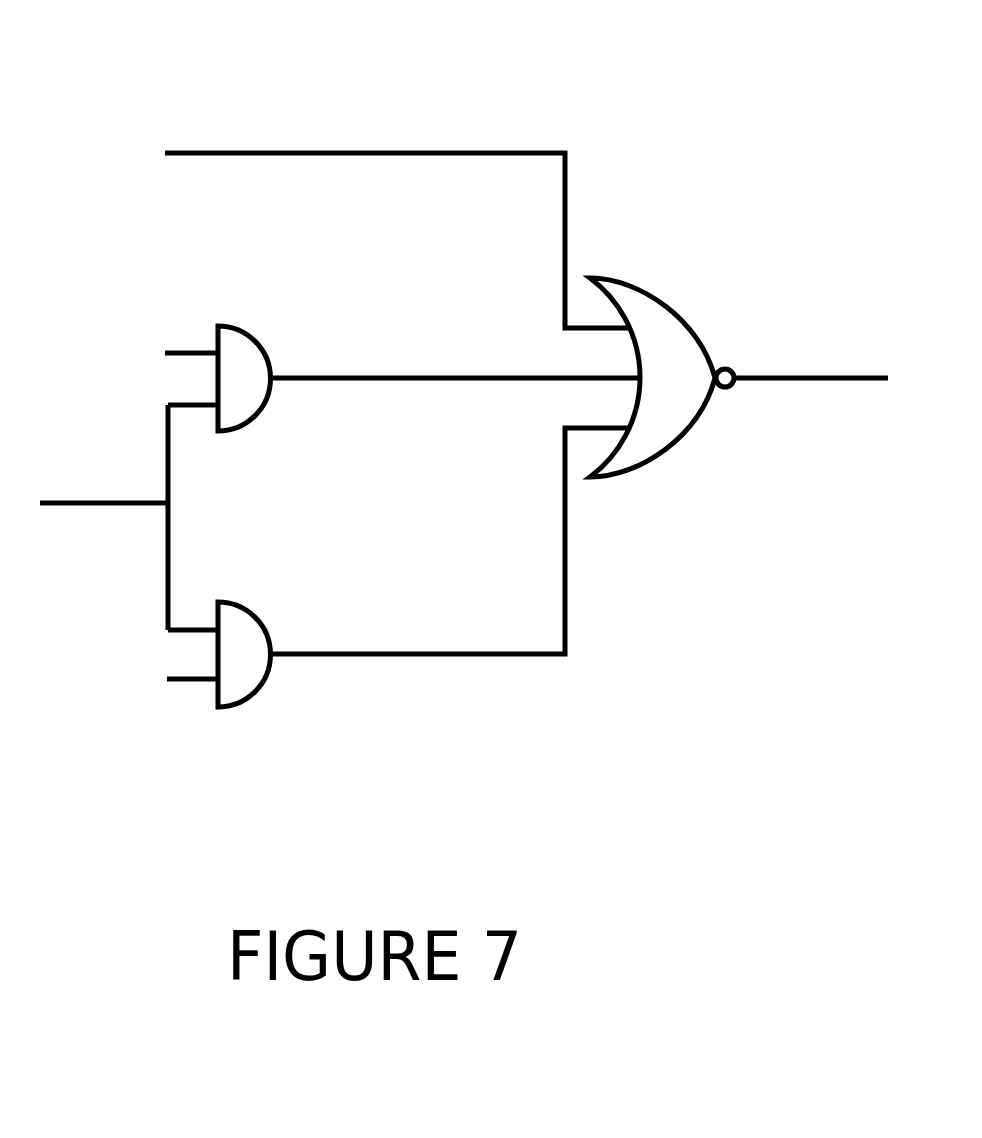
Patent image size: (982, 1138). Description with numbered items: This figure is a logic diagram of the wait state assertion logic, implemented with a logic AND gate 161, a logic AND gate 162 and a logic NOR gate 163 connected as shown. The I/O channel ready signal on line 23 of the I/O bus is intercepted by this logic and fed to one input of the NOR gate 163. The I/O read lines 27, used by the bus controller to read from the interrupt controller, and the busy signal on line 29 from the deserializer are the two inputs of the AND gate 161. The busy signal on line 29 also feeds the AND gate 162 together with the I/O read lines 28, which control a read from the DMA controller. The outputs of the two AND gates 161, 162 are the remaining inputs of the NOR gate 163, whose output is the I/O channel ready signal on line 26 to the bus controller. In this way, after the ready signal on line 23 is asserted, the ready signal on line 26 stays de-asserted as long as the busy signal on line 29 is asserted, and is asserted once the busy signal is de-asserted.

The I/O channel ready signal line 23 is at (236, 151).
The I/O channel ready signal line to bus controller 26 is at (830, 378).
The I/O read lines 27 is at (190, 351).
The I/O read lines 28 is at (190, 680).
The busy signal line 29 is at (112, 503).
The logic AND gate 161 is at (238, 327).
The logic AND gate 162 is at (240, 602).
The logic NOR gate 163 is at (635, 278).